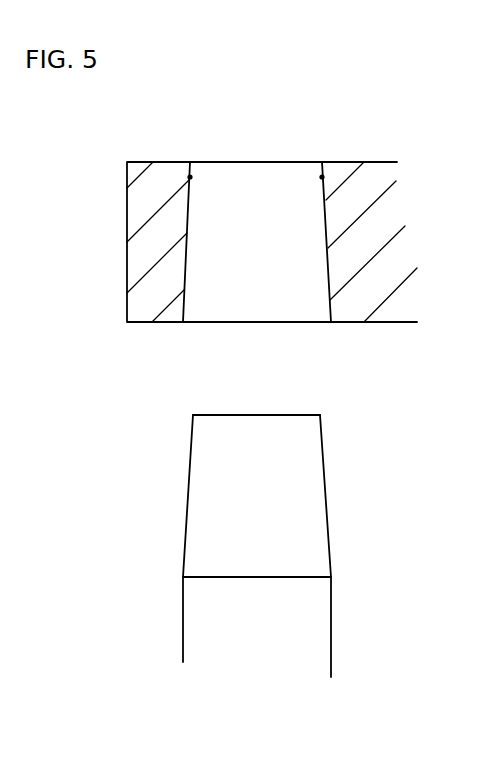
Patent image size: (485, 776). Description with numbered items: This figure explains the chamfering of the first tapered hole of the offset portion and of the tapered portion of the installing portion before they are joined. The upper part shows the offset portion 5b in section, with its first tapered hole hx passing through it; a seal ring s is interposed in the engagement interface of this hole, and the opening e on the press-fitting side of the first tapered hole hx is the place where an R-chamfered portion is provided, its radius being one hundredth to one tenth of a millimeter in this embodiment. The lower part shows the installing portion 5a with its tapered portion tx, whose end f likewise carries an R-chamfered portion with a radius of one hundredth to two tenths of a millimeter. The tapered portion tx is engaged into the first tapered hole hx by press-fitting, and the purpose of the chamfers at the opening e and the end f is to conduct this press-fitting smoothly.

The offset portion 5b is at (362, 183).
The first tapered hole hx is at (192, 223).
The seal ring s is at (322, 177).
The opening on the press-fitting side of the first tapered hole e is at (183, 322).
The end of the tapered portion f is at (193, 415).
The tapered portion tx is at (213, 502).
The installing portion 5a is at (205, 627).